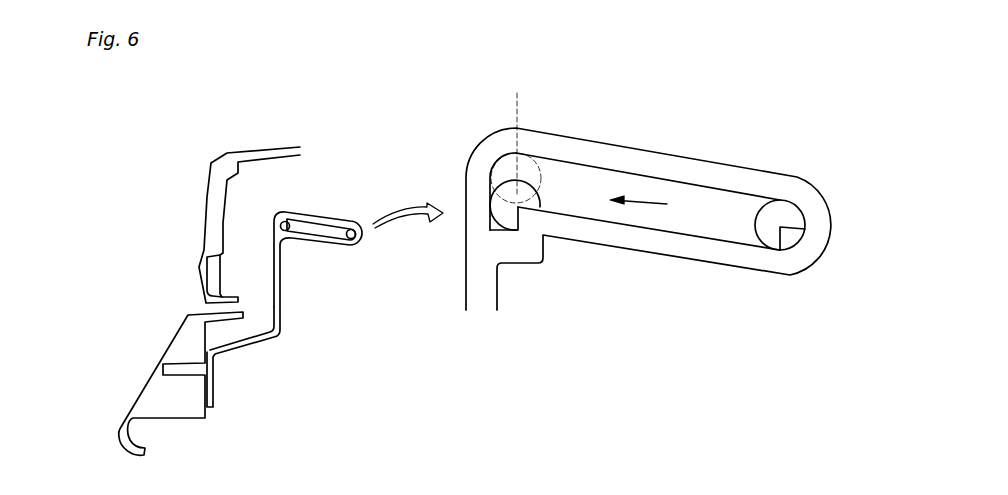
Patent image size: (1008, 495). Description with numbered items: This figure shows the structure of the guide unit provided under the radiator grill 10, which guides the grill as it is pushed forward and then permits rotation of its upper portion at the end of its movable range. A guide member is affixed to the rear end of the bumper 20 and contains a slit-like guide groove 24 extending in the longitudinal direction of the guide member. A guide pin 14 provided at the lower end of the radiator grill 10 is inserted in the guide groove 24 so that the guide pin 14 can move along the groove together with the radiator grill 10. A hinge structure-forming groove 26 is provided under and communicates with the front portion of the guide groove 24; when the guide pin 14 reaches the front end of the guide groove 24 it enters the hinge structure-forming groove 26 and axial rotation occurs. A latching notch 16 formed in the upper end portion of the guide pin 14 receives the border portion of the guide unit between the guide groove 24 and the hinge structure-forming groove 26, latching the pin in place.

The radiator grill 10 is at (215, 218).
The guide pin 14 is at (517, 197).
The latching notch 16 is at (786, 248).
The bumper 20 is at (188, 340).
The guide groove 24 is at (656, 178).
The hinge structure-forming groove 26 is at (492, 217).